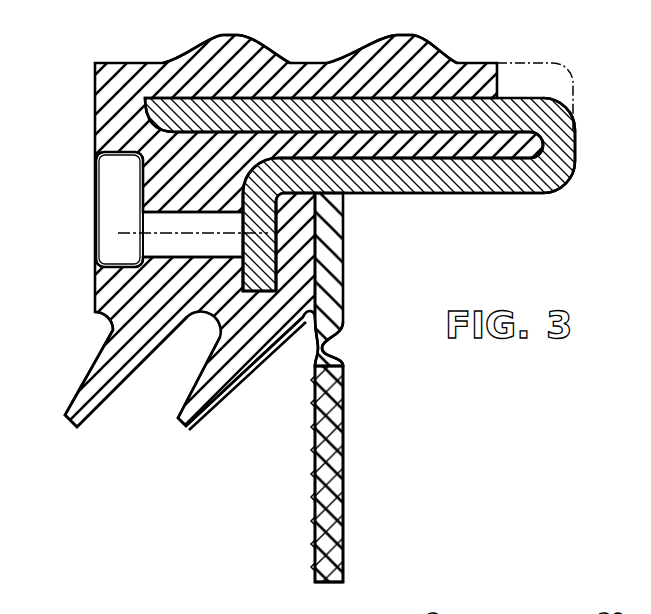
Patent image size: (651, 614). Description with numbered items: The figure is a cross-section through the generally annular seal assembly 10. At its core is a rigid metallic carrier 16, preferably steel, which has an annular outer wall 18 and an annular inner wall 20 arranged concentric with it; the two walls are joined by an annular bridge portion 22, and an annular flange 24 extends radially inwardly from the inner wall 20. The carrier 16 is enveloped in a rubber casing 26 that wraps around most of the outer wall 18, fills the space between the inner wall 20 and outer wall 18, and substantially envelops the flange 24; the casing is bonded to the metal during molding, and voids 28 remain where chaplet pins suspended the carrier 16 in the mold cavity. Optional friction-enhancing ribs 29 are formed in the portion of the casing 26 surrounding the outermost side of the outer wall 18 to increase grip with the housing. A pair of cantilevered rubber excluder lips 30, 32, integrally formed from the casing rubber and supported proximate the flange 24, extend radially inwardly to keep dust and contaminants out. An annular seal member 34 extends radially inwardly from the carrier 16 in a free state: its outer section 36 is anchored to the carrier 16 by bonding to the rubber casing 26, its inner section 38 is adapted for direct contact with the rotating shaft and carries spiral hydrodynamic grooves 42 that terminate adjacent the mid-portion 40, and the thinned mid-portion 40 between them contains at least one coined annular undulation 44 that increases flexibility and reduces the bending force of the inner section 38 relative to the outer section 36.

The seal assembly 10 is at (74, 58).
The carrier 16 is at (576, 162).
The outer wall 18 is at (310, 96).
The inner wall 20 is at (435, 193).
The bridge portion 22 is at (576, 142).
The flange 24 is at (258, 293).
The rubber casing 26 is at (498, 63).
The voids 28 is at (163, 243).
The friction-enhancing ribs 29 is at (230, 35).
The excluder lip 30 is at (72, 410).
The excluder lip 32 is at (180, 422).
The seal member 34 is at (333, 588).
The outer section 36 is at (360, 196).
The inner section 38 is at (360, 366).
The mid-portion 40 is at (360, 318).
The hydrodynamic grooves 42 is at (315, 548).
The annular undulation 44 is at (313, 342).